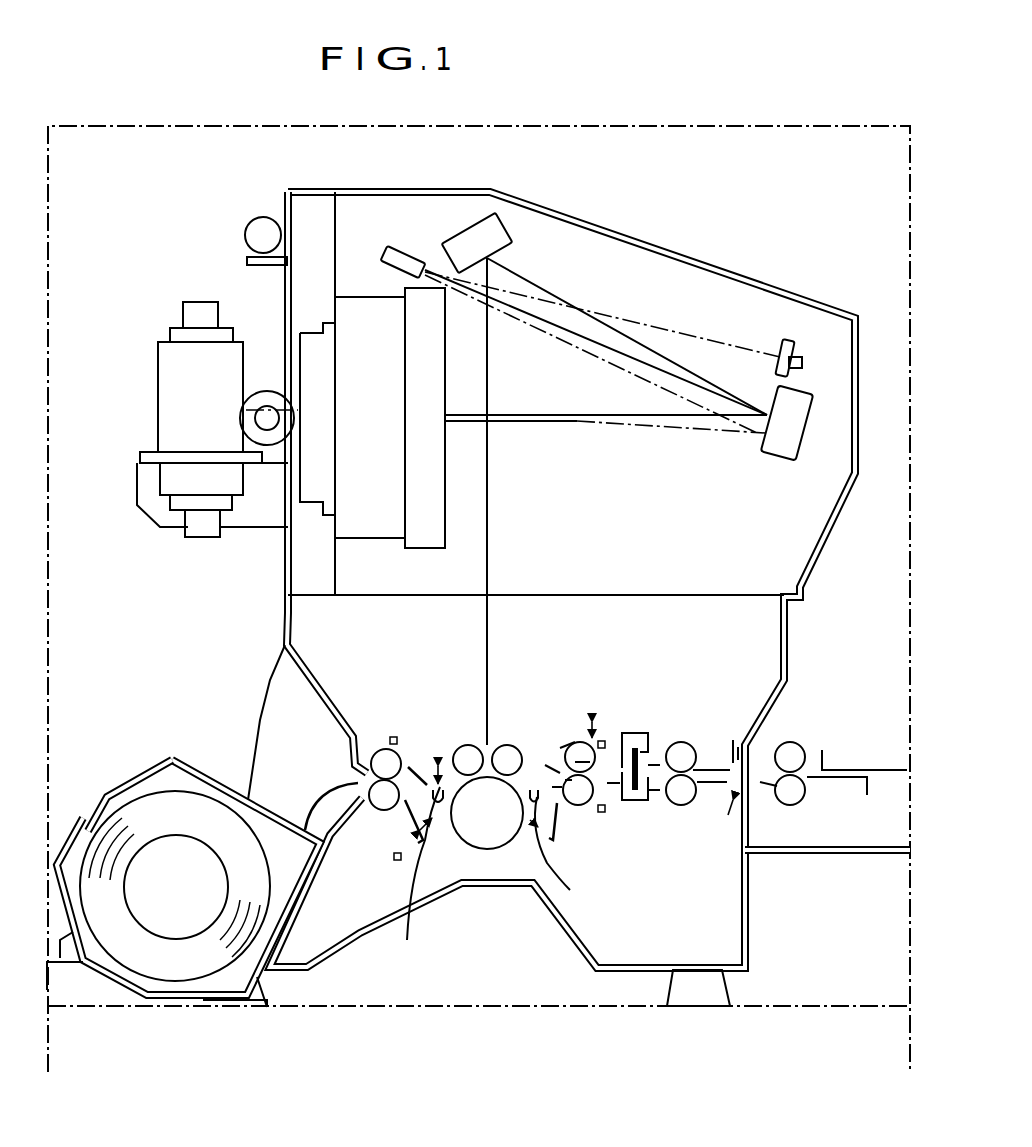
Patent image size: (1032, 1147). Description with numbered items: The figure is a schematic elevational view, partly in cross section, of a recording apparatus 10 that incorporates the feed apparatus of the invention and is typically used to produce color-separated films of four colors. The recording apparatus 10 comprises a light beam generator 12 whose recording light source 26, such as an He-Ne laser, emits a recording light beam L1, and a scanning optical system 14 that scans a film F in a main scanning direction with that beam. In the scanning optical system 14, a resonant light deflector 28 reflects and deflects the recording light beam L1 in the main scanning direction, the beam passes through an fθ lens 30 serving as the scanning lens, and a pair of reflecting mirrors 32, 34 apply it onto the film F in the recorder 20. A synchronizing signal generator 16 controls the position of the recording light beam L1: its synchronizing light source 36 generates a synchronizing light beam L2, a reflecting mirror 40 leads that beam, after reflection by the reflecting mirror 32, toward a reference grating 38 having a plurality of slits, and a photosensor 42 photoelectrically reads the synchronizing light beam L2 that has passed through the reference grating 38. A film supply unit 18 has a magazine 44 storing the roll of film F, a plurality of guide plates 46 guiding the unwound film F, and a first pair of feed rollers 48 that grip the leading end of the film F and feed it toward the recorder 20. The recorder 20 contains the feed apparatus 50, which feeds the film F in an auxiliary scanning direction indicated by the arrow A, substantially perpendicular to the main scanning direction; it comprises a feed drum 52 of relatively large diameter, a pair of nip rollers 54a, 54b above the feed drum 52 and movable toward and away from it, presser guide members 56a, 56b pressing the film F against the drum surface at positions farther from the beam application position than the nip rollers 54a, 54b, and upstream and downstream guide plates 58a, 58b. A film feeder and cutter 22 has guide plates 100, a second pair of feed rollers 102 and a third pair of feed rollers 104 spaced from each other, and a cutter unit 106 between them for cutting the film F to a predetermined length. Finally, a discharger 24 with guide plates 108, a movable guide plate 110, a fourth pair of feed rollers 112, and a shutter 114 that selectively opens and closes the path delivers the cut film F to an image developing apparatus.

The recording apparatus 10 is at (810, 102).
The light beam generator 12 is at (268, 198).
The scanning optical system 14 is at (401, 558).
The synchronizing signal generator 16 is at (785, 328).
The film supply unit 18 is at (248, 745).
The recorder 20 is at (518, 664).
The film feeder and cutter 22 is at (677, 697).
The discharger 24 is at (842, 683).
The recording light source 26 is at (258, 222).
The resonant light deflector 28 is at (158, 398).
The fθ lens 30 is at (380, 470).
The reflecting mirror 32 is at (780, 458).
The reflecting mirror 34 is at (495, 238).
The synchronizing light source 36 is at (267, 392).
The reference grating 38 is at (790, 336).
The reflecting mirror 40 is at (385, 258).
The photosensor 42 is at (803, 362).
The magazine 44 is at (152, 760).
The guide plates 46 is at (425, 740).
The first pair of feed rollers 48 is at (372, 748).
The feed apparatus 50 is at (463, 870).
The feed drum 52 is at (483, 837).
The nip roller 54a is at (466, 743).
The nip roller 54b is at (506, 745).
The presser guide members 56a is at (411, 886).
The presser guide members 56b is at (575, 861).
The upstream guide plate 58a is at (412, 817).
The downstream guide plate 58b is at (557, 820).
The guide plates 100 is at (507, 747).
The second pair of feed rollers 102 is at (585, 735).
The third pair of feed rollers 104 is at (688, 745).
The cutter unit 106 is at (635, 733).
The guide plates 108 is at (832, 780).
The movable guide plate 110 is at (730, 790).
The fourth pair of feed rollers 112 is at (793, 740).
The shutter 114 is at (867, 763).
The film F is at (172, 968).
The arrow indicating auxiliary scanning direction A is at (543, 780).
The recording light beam L1 is at (490, 540).
The synchronizing light beam L2 is at (680, 330).